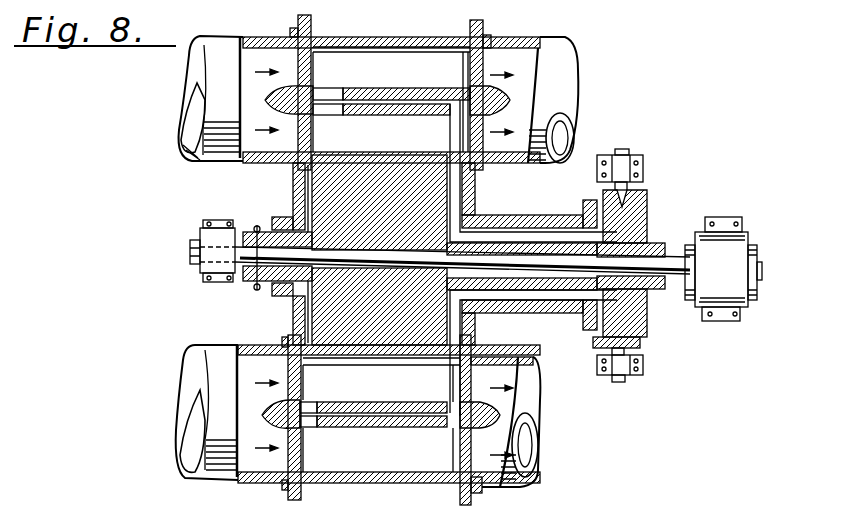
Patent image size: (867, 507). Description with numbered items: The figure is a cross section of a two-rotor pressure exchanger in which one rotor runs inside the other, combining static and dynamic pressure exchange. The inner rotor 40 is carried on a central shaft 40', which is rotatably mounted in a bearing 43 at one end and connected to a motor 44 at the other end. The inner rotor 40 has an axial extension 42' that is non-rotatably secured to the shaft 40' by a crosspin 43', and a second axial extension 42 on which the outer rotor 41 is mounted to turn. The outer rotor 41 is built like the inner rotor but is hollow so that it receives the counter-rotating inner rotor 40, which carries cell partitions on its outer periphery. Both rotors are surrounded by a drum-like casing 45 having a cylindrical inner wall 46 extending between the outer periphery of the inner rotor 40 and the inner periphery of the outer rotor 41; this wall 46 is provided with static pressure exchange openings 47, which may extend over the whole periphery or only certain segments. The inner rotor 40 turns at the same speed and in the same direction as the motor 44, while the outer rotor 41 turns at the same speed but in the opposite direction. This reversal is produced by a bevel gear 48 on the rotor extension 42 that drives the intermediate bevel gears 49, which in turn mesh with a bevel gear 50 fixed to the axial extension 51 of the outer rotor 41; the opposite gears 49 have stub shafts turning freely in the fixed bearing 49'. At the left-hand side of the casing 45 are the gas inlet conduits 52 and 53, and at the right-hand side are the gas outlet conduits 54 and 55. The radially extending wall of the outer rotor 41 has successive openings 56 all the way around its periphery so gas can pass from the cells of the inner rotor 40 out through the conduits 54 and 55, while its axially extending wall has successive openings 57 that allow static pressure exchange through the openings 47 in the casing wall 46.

The inner rotor 40 is at (353, 250).
The central shaft 40' is at (179, 252).
The outer rotor 41 is at (478, 196).
The axial extension 42 is at (522, 311).
The axial extension 42' is at (276, 271).
The bearing 43 is at (207, 262).
The crosspin 43' is at (255, 242).
The motor 44 is at (745, 310).
The casing 45 is at (384, 489).
The cylindrical inner wall 46 is at (366, 408).
The static pressure exchange openings 47 is at (330, 110).
The bevel gear 48 is at (642, 318).
The intermediate bevel gears 49 is at (640, 260).
The fixed bearing 49' is at (646, 378).
The bevel gear 50 is at (594, 328).
The axial extension 51 is at (500, 240).
The gas inlet conduit 52 is at (216, 47).
The gas inlet conduit 53 is at (206, 480).
The gas outlet conduit 54 is at (547, 55).
The gas outlet conduit 55 is at (512, 490).
The openings 56 is at (458, 135).
The openings 57 is at (322, 92).